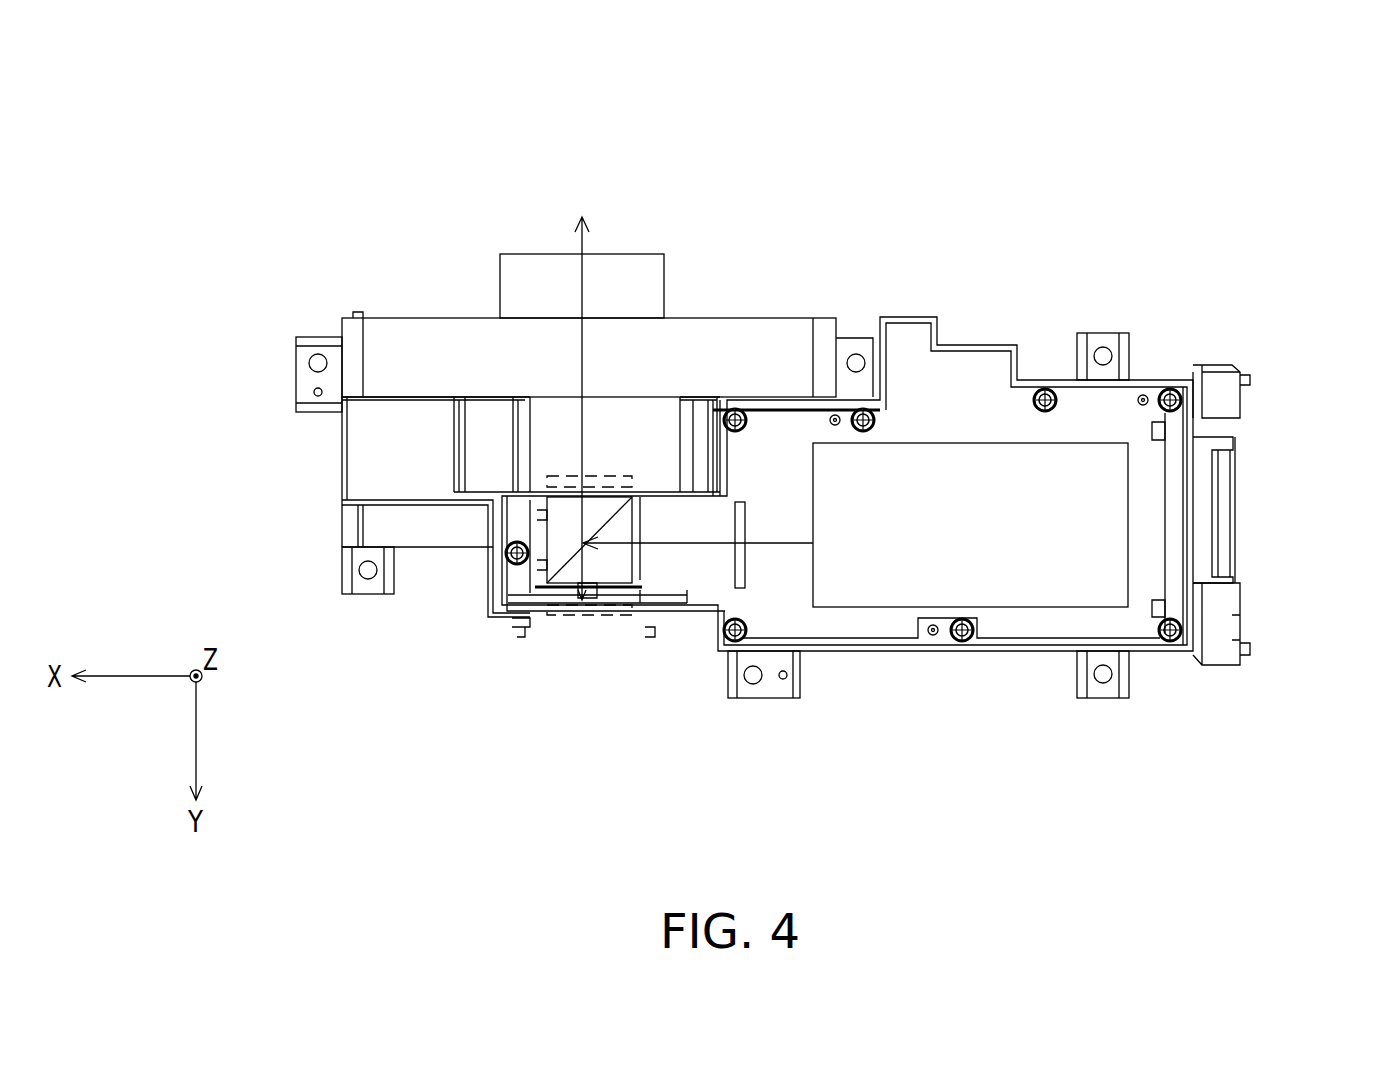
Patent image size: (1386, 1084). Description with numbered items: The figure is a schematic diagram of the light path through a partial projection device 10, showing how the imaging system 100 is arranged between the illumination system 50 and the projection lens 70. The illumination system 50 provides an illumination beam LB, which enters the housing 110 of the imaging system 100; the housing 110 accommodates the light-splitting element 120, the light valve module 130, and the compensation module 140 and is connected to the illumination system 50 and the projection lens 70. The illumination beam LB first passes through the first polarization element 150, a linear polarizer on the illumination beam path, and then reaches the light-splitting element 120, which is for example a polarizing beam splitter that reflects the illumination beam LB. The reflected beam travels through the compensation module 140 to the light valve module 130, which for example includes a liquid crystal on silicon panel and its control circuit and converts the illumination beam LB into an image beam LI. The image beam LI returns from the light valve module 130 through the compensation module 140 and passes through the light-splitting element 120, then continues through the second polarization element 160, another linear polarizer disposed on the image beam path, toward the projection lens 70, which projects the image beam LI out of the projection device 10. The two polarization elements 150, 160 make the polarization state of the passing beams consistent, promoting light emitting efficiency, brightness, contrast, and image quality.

The projection device 10 is at (1355, 849).
The illumination system 50 is at (972, 490).
The projection lens 70 is at (652, 292).
The imaging system 100 is at (108, 50).
The housing 110 is at (902, 643).
The light-splitting element 120 is at (597, 560).
The light valve module 130 is at (565, 613).
The compensation module 140 is at (568, 590).
The first polarization element 150 is at (738, 577).
The second polarization element 160 is at (567, 482).
The image beam LI is at (582, 290).
The illumination beam LB is at (787, 547).